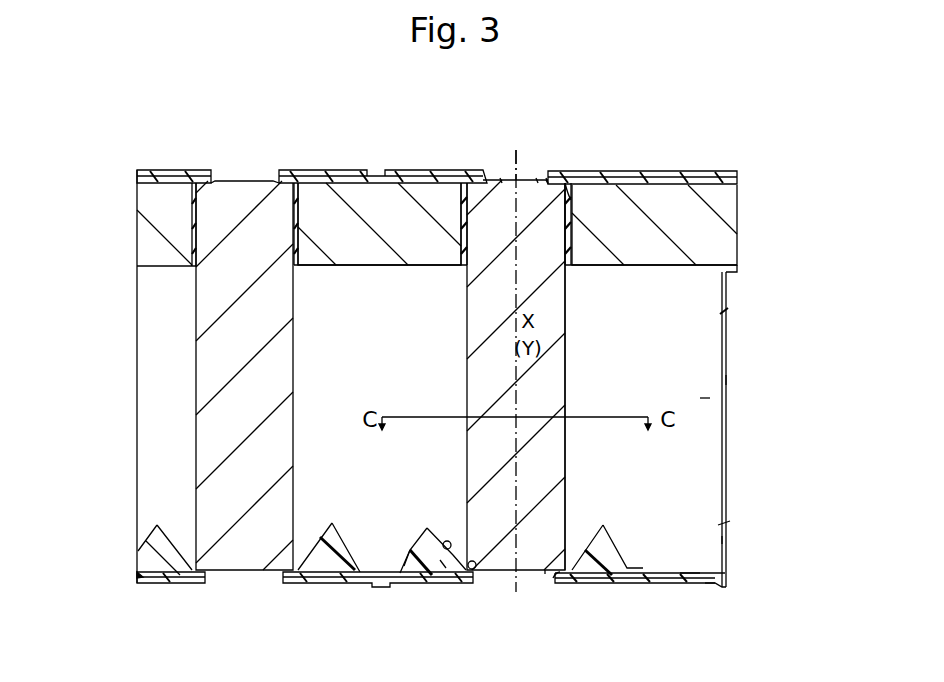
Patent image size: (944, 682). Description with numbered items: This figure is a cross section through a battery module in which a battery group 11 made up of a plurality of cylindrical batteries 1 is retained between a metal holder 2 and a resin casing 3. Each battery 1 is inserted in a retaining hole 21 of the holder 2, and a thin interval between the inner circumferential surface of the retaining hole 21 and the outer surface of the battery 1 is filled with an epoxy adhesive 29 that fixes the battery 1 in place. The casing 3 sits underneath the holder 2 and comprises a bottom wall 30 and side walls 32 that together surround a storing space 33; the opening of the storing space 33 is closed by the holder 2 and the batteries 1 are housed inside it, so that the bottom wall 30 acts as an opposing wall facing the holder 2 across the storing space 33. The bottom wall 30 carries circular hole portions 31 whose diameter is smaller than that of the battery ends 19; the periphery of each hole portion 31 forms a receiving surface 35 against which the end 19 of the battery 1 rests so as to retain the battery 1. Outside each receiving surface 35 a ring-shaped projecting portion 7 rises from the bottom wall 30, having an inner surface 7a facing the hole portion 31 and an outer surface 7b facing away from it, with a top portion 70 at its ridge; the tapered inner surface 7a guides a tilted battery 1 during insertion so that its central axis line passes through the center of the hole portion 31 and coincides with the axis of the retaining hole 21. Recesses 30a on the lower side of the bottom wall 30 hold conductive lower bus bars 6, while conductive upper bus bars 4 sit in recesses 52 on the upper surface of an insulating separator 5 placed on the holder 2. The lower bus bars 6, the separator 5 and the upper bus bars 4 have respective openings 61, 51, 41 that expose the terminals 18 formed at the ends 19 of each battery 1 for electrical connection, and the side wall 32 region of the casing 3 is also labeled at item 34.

The battery 1 is at (215, 453).
The holder 2 is at (720, 208).
The casing 3 is at (727, 302).
The upper bus bar 4 is at (185, 170).
The separator 5 is at (737, 178).
The lower bus bar 6 is at (312, 583).
The projecting portion 7 is at (755, 492).
The inner surface 7a is at (452, 562).
The outer surface 7b is at (413, 556).
The top portion 70 is at (447, 566).
The battery group 11 is at (567, 360).
The terminal 18 is at (500, 178).
The end 19 is at (522, 178).
The retaining hole 21 is at (563, 190).
The adhesive 29 is at (572, 238).
The bottom wall 30 is at (687, 568).
The recess 30a is at (710, 584).
The hole portion 31 is at (557, 604).
The side wall 32 is at (726, 540).
The storing space 33 is at (708, 400).
The inner surface 34 is at (726, 380).
The receiving surface 35 is at (478, 585).
The opening 41 is at (546, 178).
The opening 51 is at (536, 178).
The recess 52 is at (367, 175).
The opening 61 is at (553, 578).